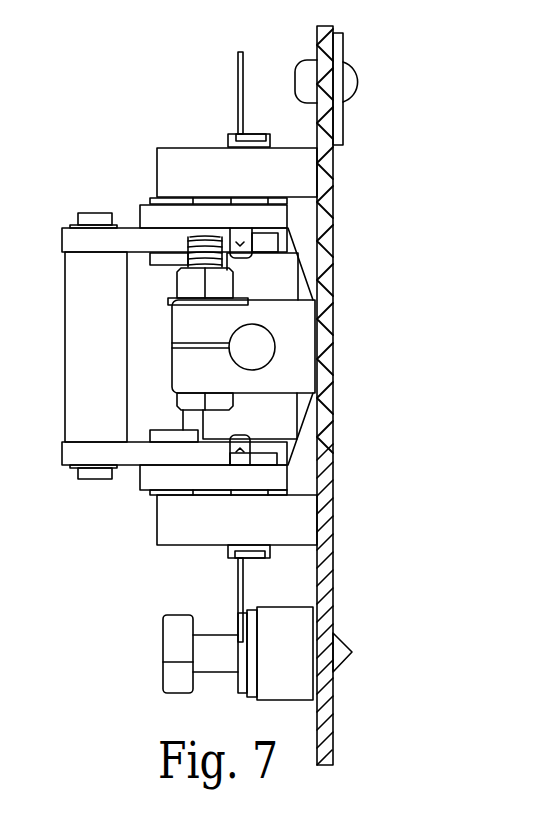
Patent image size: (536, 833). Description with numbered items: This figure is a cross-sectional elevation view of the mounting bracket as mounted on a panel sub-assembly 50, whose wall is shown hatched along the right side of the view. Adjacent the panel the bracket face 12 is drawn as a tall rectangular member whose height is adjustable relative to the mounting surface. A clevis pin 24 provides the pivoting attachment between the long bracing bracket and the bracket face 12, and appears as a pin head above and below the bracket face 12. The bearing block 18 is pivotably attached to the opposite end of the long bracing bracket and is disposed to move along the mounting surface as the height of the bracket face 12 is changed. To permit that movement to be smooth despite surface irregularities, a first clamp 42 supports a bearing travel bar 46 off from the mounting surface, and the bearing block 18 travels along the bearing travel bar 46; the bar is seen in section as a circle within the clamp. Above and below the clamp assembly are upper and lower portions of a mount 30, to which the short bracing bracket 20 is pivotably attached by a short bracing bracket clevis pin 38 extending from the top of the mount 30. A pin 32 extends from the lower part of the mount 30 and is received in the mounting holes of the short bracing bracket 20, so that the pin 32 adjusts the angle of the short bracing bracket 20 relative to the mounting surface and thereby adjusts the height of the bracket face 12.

The bracket face 12 is at (106, 385).
The bearing block 18 is at (275, 290).
The short bracing bracket 20 is at (185, 413).
The clevis pin 24 is at (95, 213).
The mount 30 is at (268, 180).
The pin 32 is at (238, 595).
The short bracing bracket clevis pin 38 is at (257, 132).
The first clamp 42 is at (303, 380).
The bearing travel bar 46 is at (264, 358).
The panel sub-assembly 50 is at (333, 732).